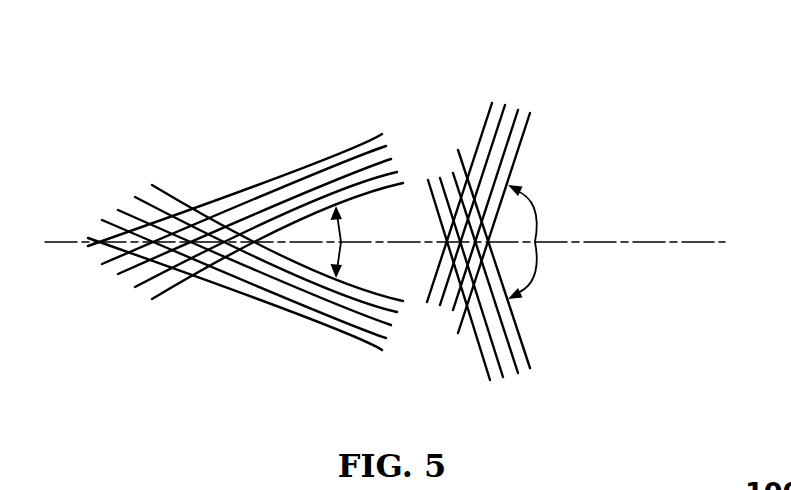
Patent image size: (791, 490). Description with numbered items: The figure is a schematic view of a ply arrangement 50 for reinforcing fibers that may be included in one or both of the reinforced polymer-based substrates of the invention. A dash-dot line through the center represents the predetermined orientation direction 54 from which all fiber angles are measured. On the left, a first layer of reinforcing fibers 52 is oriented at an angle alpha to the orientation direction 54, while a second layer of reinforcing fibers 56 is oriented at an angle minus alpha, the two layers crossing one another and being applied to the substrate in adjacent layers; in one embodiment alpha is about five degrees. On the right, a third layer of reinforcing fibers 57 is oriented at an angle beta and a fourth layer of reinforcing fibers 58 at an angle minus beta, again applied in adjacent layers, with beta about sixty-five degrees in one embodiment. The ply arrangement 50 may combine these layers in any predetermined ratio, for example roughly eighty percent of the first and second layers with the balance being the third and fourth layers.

The ply arrangement 50 is at (608, 128).
The first layer of reinforcing fibers 52 is at (316, 160).
The predetermined orientation direction 54 is at (679, 242).
The second layer of reinforcing fibers 56 is at (293, 314).
The third layer of reinforcing fibers 57 is at (487, 123).
The fourth layer of reinforcing fibers 58 is at (486, 367).